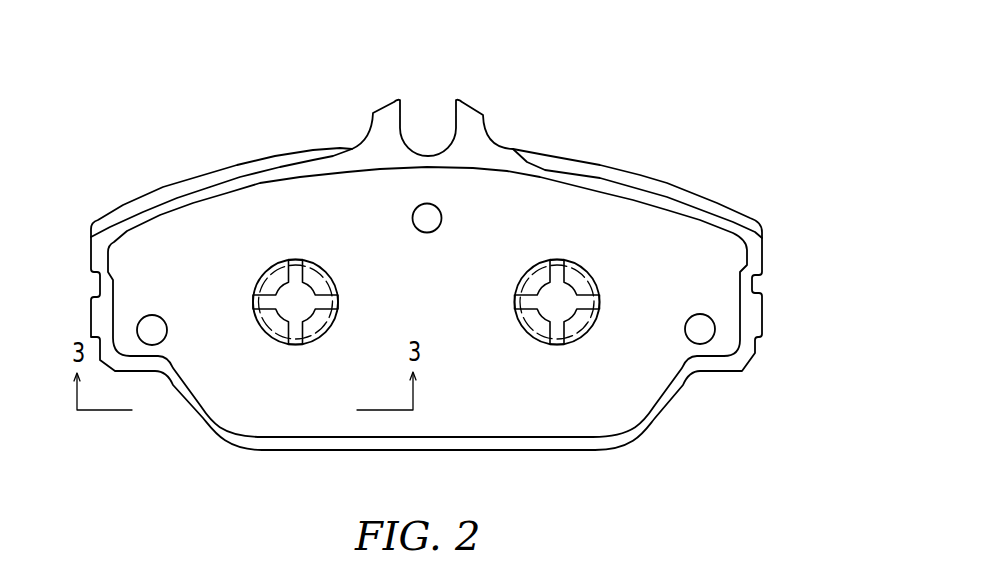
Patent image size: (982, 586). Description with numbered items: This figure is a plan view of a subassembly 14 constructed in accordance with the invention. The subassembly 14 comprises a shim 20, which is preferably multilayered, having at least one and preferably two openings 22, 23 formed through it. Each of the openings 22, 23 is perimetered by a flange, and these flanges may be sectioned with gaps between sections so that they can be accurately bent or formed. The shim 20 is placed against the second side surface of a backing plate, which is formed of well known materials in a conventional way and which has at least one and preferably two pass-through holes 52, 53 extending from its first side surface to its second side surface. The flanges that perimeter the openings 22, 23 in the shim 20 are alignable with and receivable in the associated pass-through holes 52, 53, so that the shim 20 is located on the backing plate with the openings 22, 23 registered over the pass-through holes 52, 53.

The subassembly 14 is at (426, 270).
The shim 20 is at (560, 418).
The opening 22 is at (300, 317).
The opening 23 is at (554, 310).
The pass-through hole 52 is at (270, 325).
The pass-through hole 53 is at (525, 315).